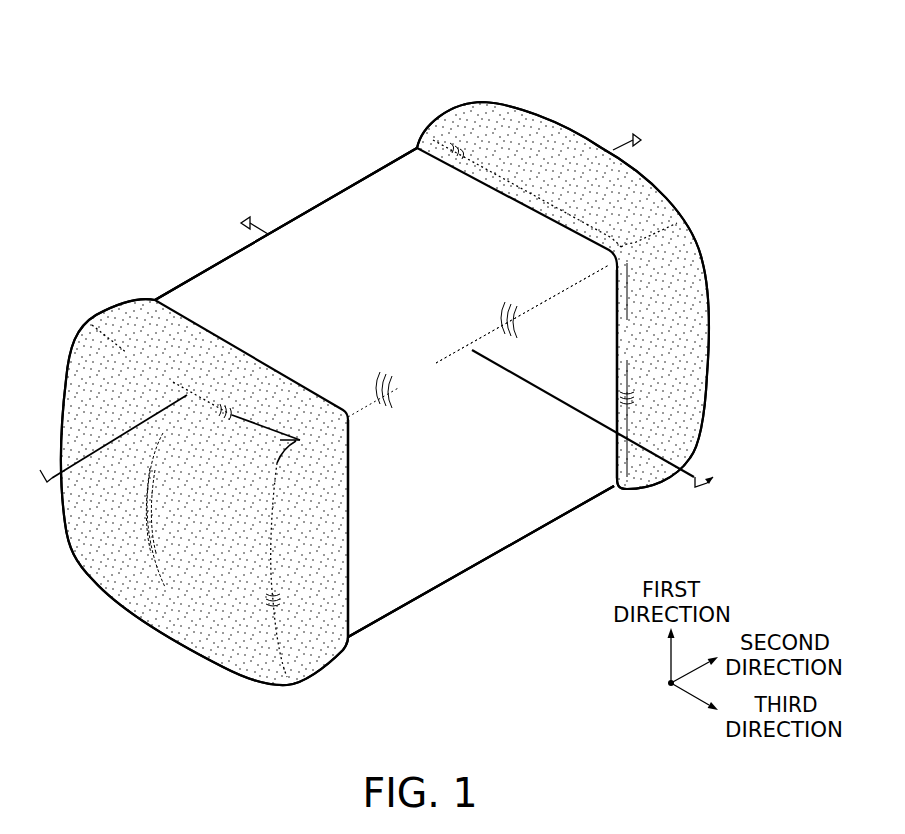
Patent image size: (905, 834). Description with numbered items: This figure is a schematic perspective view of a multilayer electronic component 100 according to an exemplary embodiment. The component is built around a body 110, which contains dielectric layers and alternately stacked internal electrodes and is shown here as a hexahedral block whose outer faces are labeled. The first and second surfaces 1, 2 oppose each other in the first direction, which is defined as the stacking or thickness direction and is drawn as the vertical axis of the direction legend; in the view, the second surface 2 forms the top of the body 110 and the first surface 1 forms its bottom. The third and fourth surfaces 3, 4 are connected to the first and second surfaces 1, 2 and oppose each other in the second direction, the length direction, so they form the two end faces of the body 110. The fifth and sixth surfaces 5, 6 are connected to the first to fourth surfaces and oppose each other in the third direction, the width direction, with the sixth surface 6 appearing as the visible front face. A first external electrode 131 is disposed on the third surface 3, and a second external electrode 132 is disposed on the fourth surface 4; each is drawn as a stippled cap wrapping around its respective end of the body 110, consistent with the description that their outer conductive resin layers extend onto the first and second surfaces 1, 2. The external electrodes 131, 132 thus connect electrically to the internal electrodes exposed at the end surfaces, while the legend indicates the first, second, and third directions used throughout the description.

The multilayer electronic component 100 is at (213, 39).
The body 110 is at (340, 207).
The first external electrode 131 is at (118, 315).
The second external electrode 132 is at (463, 113).
The first surface 1 is at (456, 582).
The second surface 2 is at (394, 186).
The third surface 3 is at (118, 552).
The fourth surface 4 is at (531, 132).
The fifth surface 5 is at (206, 263).
The sixth surface 6 is at (536, 507).